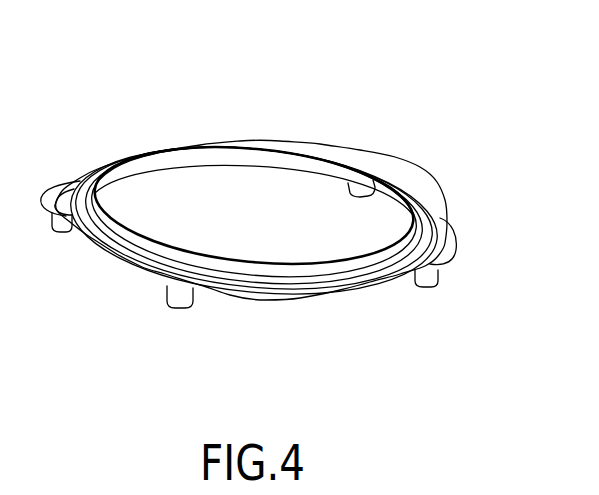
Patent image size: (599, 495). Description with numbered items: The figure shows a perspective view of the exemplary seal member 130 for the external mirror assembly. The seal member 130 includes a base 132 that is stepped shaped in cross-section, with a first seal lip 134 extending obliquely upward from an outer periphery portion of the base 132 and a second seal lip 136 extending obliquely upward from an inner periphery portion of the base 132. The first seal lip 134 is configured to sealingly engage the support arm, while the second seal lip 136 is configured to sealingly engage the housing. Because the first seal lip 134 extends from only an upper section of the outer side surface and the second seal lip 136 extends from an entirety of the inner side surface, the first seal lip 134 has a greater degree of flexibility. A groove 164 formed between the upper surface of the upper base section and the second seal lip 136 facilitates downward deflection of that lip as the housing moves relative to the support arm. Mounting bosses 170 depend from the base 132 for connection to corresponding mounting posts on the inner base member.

The seal member 130 is at (242, 197).
The base 132 is at (338, 284).
The first seal lip 134 is at (117, 256).
The second seal lip 136 is at (200, 139).
The groove 164 is at (288, 282).
The mounting bosses 170 is at (349, 184).